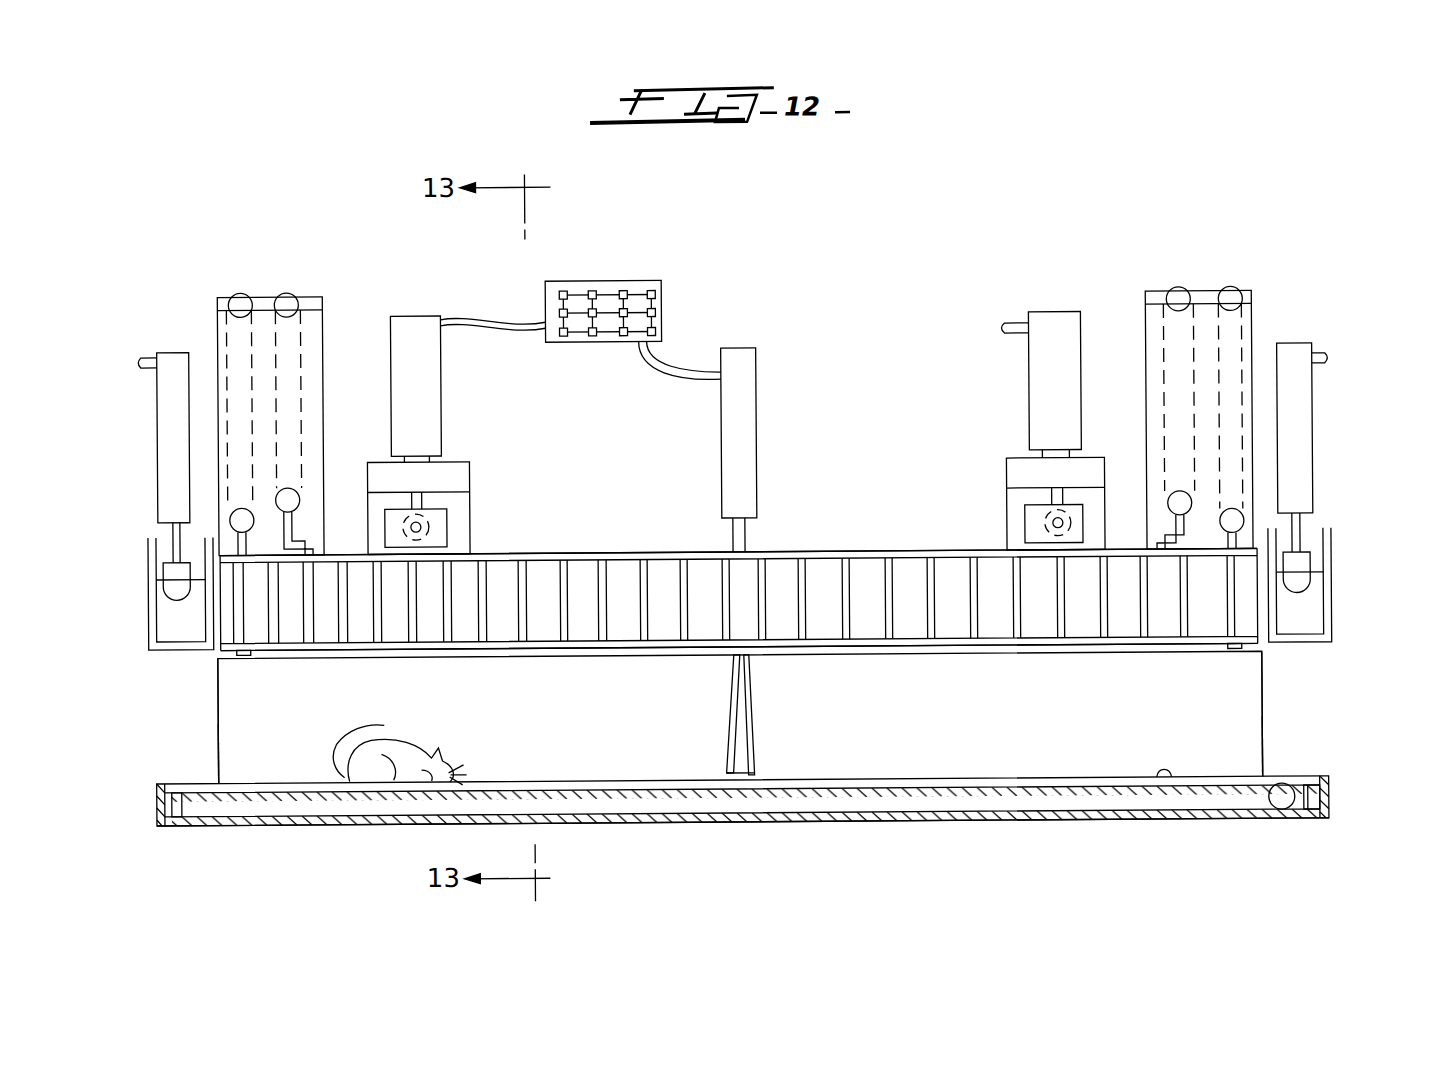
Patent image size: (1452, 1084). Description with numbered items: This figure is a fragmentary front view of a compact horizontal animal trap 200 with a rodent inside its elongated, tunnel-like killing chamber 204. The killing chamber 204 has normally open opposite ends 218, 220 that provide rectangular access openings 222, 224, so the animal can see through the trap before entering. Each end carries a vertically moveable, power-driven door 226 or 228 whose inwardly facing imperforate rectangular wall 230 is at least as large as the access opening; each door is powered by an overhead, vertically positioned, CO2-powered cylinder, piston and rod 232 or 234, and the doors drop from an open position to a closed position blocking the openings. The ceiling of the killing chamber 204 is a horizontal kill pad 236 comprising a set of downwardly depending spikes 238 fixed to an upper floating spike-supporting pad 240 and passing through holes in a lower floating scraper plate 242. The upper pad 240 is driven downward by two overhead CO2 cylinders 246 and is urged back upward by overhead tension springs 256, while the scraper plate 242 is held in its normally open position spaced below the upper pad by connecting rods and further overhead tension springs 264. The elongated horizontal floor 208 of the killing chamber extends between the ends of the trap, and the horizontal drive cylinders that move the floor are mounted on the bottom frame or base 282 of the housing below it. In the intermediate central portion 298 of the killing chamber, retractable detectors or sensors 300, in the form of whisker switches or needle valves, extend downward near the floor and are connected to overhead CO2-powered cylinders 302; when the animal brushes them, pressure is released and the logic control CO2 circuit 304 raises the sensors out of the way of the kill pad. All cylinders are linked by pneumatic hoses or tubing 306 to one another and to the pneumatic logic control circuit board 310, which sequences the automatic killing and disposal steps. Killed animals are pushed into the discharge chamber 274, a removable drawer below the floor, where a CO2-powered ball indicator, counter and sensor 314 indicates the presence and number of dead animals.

The compact horizontal animal trap 200 is at (943, 835).
The killing chamber 204 is at (933, 731).
The floor of the killing chamber 208 is at (1173, 778).
The end of the killing chamber 218 is at (217, 705).
The end of the killing chamber 220 is at (1263, 710).
The access opening 222 is at (226, 745).
The access opening 224 is at (1263, 757).
The door 226 is at (148, 591).
The door 228 is at (1331, 611).
The imperforate rectangular wall 230 is at (217, 650).
The cylinder, piston and rod 232 is at (158, 421).
The cylinder, piston and rod 234 is at (1313, 461).
The kill pad 236 is at (548, 538).
The spikes 238 is at (525, 609).
The upper spike-supporting pad 240 is at (739, 598).
The lower scraper plate 242 is at (1087, 648).
The CO2 power-driven cylinders 246 is at (442, 403).
The tension springs 256 is at (283, 290).
The tension springs 264 is at (237, 290).
The discharge chamber 274 is at (1327, 793).
The bottom frame or base of the housing 282 is at (218, 826).
The intermediate central portion of the killing chamber 298 is at (767, 755).
The detectors or sensors 300 is at (727, 724).
The CO2-powered cylinders 302 is at (733, 347).
The logic control CO2 circuit 304 is at (577, 294).
The pneumatic hoses or tubing 306 is at (680, 381).
The logic control circuit board 310 is at (665, 301).
The ball indicator, counter and sensor 314 is at (1282, 810).